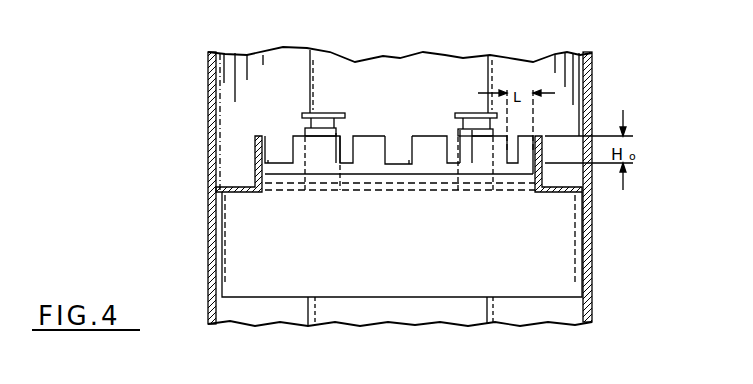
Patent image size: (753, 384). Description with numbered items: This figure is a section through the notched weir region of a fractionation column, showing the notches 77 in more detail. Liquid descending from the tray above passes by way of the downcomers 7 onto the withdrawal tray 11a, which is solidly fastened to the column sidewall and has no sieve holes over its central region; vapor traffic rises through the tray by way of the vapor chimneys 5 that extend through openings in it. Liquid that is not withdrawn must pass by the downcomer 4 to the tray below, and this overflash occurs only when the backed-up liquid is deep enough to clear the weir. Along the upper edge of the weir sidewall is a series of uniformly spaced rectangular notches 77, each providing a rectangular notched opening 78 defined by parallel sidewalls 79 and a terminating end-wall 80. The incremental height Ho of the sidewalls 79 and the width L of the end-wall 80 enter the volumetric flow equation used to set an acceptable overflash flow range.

The downcomers 7 is at (375, 90).
The downcomer 4 is at (273, 282).
The withdrawal tray 11a is at (233, 186).
The notches 77 is at (278, 155).
The notched opening 78 is at (280, 145).
The sidewalls 79 is at (413, 150).
The end-wall 80 is at (517, 165).
The vapor chimneys 5 is at (470, 113).